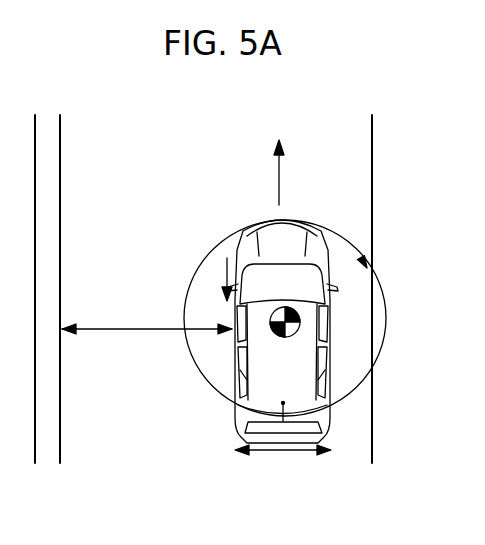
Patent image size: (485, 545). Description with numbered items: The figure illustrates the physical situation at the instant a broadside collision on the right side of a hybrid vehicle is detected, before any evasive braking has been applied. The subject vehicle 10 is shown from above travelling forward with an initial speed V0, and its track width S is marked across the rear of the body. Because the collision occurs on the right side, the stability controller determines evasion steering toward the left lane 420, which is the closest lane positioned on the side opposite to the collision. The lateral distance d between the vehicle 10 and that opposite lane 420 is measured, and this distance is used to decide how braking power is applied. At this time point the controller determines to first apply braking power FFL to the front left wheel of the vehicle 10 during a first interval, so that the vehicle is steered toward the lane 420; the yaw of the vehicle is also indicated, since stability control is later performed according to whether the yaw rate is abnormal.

The subject vehicle 10 is at (331, 322).
The lane 420 is at (60, 443).
The distance between vehicle and opposite lane d is at (147, 339).
The track width of vehicle S is at (283, 460).
The initial speed of vehicle V0 is at (293, 172).
The left braking power of front wheel FFL is at (215, 282).